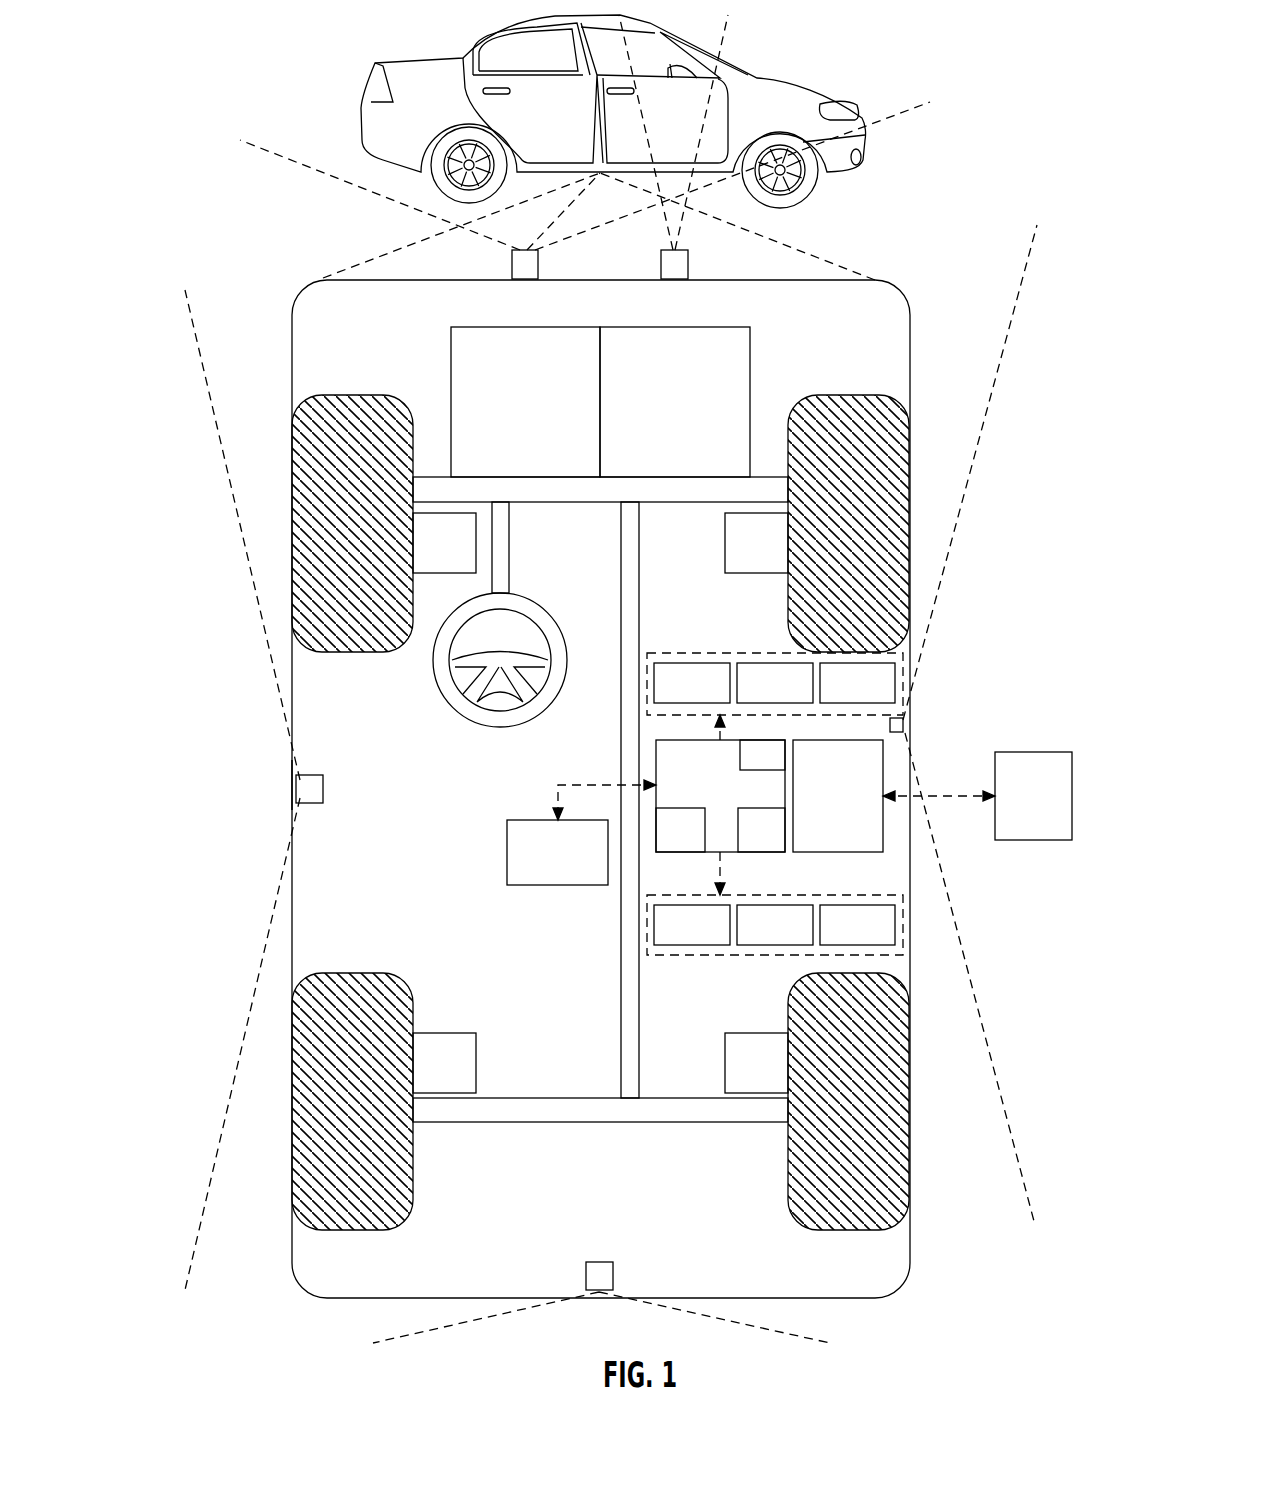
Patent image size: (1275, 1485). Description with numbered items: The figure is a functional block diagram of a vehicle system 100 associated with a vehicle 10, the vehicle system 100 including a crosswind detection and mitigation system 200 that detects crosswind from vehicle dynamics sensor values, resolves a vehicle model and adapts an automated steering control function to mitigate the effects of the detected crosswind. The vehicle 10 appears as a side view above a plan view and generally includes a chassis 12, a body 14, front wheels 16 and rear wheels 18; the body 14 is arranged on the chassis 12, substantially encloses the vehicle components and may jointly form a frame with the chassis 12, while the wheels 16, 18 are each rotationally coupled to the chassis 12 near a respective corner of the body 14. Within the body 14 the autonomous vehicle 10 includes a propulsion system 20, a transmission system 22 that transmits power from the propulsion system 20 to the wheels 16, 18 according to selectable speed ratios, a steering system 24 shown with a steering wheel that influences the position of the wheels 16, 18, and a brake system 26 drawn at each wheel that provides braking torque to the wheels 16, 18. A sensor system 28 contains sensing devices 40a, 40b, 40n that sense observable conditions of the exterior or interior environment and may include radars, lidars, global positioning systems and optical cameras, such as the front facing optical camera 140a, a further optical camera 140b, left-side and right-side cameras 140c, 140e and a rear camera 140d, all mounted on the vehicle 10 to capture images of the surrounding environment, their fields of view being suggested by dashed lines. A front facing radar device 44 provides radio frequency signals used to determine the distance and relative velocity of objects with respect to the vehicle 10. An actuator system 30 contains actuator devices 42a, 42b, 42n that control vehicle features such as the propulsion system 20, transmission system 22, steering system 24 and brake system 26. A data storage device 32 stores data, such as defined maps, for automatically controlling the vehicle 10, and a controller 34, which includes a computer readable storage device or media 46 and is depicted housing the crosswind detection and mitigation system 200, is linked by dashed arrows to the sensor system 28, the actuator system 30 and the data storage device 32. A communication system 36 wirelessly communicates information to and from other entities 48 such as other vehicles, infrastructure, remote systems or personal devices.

The vehicle 10 is at (372, 97).
The chassis 12 is at (620, 958).
The body 14 is at (292, 785).
The front wheels 16 is at (352, 395).
The rear wheels 18 is at (350, 1230).
The propulsion system 20 is at (542, 421).
The transmission system 22 is at (692, 421).
The steering system 24 is at (522, 572).
The brake system 26 is at (461, 559).
The sensor system 28 is at (775, 668).
The actuator system 30 is at (775, 945).
The data storage device 32 is at (575, 868).
The controller 34 is at (720, 805).
The communication system 36 is at (855, 812).
The sensing device 40a is at (715, 697).
The sensing device 40b is at (798, 697).
The sensing device 40n is at (880, 697).
The actuator device 42a is at (715, 939).
The actuator device 42b is at (798, 939).
The actuator device 42n is at (880, 939).
The front facing radar device 44 is at (696, 845).
The computer readable storage device or media 46 is at (777, 845).
The other entities 48 is at (1050, 812).
The vehicle system 100 is at (910, 243).
The front facing optical camera 140a is at (513, 268).
The optical camera 140b is at (688, 270).
The left-side camera 140c is at (323, 790).
The rear camera 140d is at (603, 1262).
The right-side camera 140e is at (903, 725).
The crosswind detection and mitigation system 200 is at (783, 768).